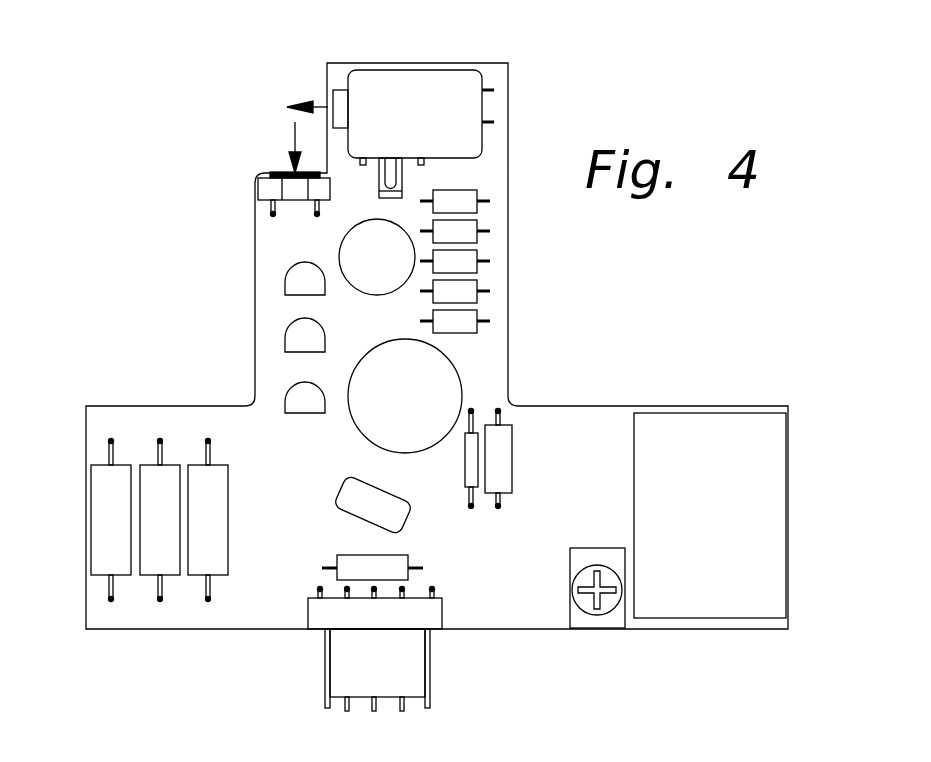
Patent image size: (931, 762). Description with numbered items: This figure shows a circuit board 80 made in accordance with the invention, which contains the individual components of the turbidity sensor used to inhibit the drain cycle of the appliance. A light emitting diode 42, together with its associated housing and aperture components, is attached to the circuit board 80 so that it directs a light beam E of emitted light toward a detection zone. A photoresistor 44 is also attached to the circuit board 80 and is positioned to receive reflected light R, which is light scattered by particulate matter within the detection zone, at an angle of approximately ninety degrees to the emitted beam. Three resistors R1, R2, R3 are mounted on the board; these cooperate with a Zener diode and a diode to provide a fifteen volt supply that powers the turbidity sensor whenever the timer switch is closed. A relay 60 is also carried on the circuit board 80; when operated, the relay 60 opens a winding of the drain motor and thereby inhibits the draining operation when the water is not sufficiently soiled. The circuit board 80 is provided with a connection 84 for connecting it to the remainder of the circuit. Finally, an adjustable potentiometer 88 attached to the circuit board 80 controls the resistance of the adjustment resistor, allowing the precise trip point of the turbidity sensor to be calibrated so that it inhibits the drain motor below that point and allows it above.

The circuit board 80 is at (577, 418).
The light emitting diode 42 is at (408, 80).
The photoresistor 44 is at (293, 200).
The relay 60 is at (768, 455).
The connection 84 is at (410, 672).
The adjustable potentiometer 88 is at (610, 606).
The resistor R1 is at (98, 548).
The resistor R2 is at (153, 567).
The resistor R3 is at (215, 567).
The light beam of emitted light E is at (316, 104).
The reflected light R is at (293, 135).